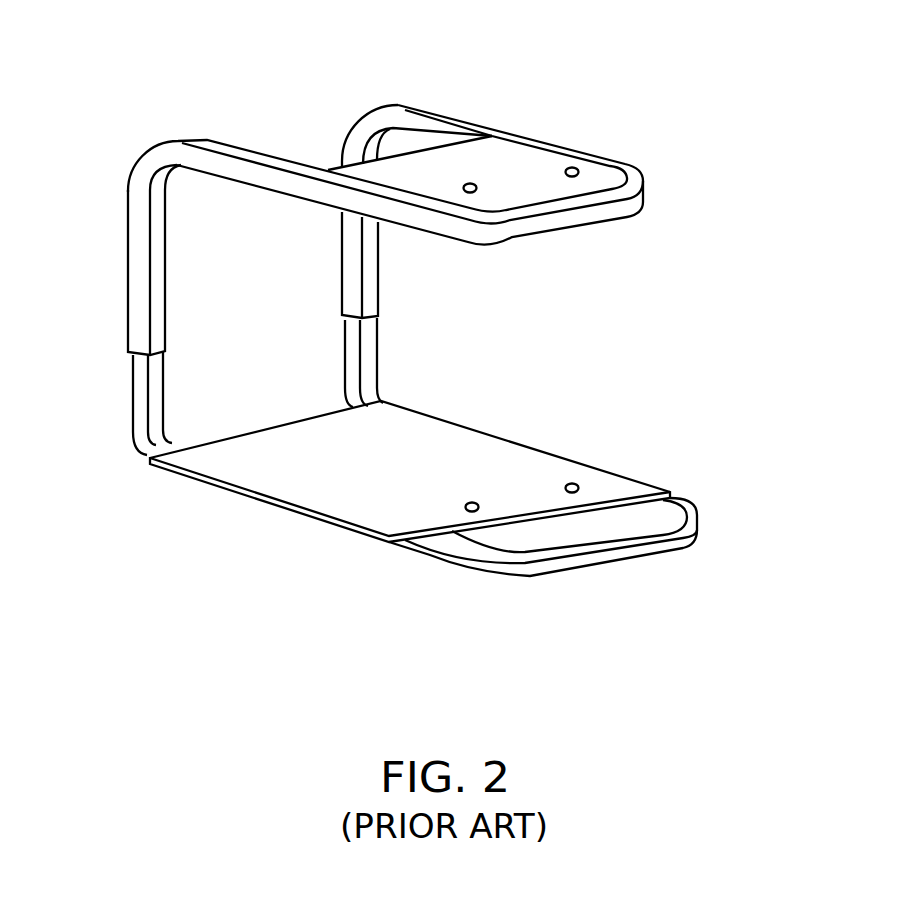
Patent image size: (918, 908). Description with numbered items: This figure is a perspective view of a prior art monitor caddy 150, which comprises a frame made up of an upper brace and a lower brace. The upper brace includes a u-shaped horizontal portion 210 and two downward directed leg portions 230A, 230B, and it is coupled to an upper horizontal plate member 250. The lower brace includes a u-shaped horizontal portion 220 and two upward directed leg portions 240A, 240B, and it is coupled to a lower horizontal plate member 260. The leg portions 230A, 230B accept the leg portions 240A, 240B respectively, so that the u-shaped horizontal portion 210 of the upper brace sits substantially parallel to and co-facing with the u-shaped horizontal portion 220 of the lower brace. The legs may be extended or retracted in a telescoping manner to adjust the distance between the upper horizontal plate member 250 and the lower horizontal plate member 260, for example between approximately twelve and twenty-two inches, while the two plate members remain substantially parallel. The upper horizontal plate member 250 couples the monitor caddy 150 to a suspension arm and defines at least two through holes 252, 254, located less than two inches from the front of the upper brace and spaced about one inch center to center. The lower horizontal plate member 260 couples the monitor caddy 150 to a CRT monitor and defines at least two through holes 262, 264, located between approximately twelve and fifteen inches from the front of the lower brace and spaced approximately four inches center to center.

The monitor caddy 150 is at (96, 132).
The u-shaped horizontal portion 210 is at (558, 132).
The u-shaped horizontal portion 220 is at (695, 518).
The leg portion 230A is at (135, 264).
The leg portion 230B is at (372, 270).
The leg portion 240A is at (133, 386).
The leg portion 240B is at (370, 372).
The upper horizontal plate member 250 is at (345, 171).
The through hole 252 is at (471, 182).
The through hole 254 is at (574, 167).
The lower horizontal plate member 260 is at (382, 512).
The through hole 262 is at (466, 506).
The through hole 264 is at (579, 487).